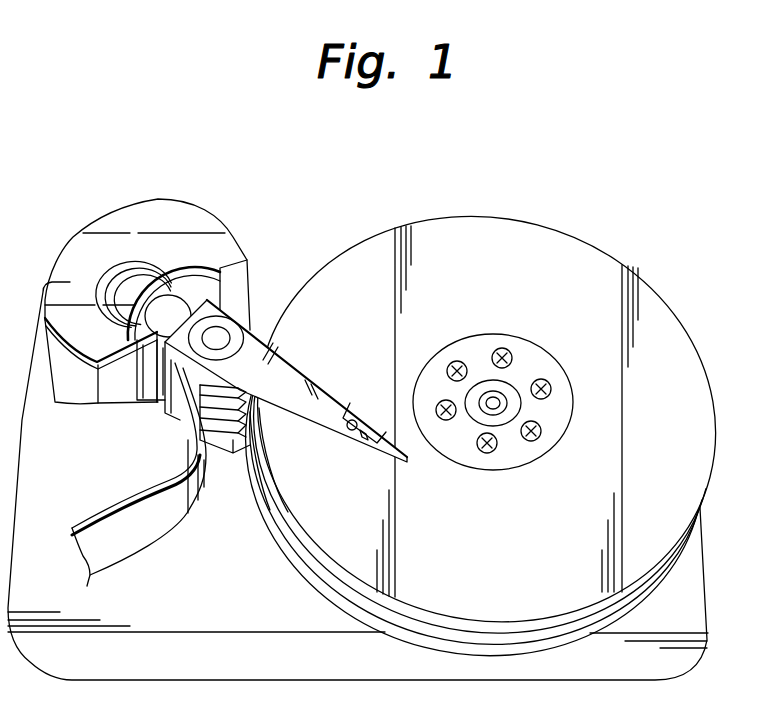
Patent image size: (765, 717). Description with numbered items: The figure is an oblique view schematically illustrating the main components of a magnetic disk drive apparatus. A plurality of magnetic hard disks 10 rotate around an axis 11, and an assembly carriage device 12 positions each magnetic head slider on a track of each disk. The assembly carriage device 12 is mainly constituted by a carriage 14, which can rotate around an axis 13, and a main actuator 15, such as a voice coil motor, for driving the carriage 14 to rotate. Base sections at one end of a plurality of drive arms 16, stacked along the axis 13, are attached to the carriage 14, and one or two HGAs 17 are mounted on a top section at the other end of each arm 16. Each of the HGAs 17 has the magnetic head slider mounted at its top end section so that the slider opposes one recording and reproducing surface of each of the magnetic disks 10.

The magnetic hard disks 10 is at (684, 296).
The axis 11 is at (508, 397).
The assembly carriage device 12 is at (97, 333).
The axis 13 is at (222, 336).
The carriage 14 is at (160, 385).
The main actuator 15 is at (138, 365).
The drive arms 16 is at (275, 370).
The HGAs 17 is at (380, 450).